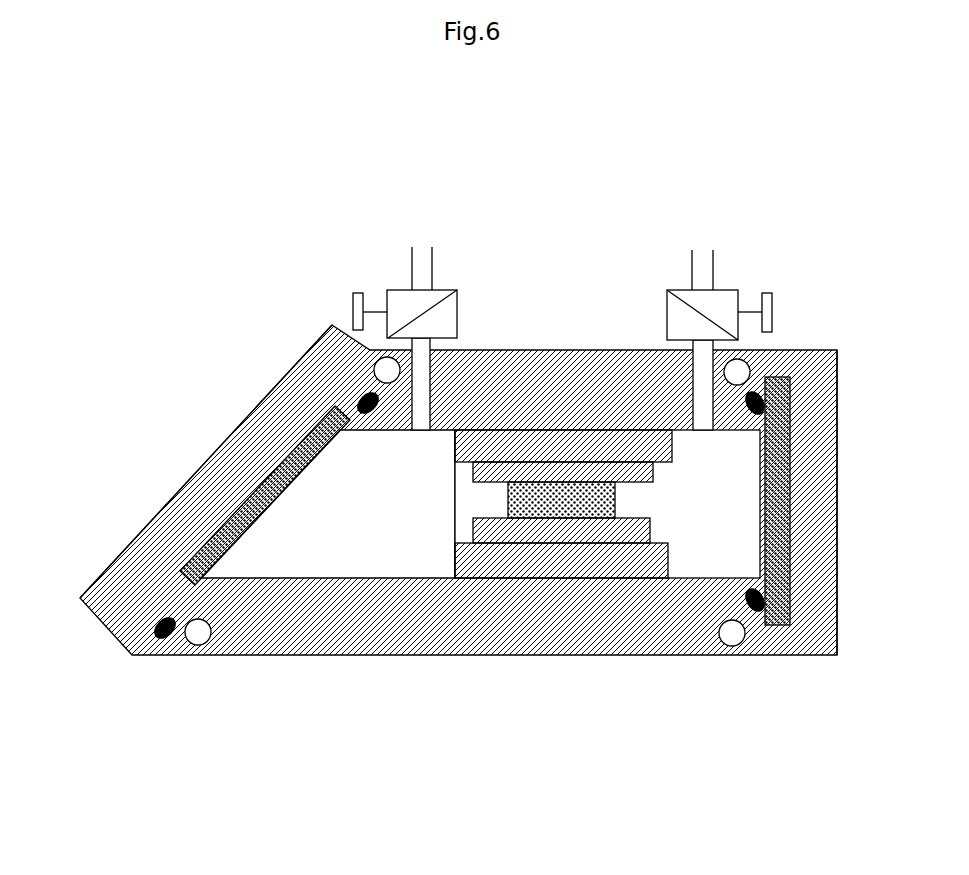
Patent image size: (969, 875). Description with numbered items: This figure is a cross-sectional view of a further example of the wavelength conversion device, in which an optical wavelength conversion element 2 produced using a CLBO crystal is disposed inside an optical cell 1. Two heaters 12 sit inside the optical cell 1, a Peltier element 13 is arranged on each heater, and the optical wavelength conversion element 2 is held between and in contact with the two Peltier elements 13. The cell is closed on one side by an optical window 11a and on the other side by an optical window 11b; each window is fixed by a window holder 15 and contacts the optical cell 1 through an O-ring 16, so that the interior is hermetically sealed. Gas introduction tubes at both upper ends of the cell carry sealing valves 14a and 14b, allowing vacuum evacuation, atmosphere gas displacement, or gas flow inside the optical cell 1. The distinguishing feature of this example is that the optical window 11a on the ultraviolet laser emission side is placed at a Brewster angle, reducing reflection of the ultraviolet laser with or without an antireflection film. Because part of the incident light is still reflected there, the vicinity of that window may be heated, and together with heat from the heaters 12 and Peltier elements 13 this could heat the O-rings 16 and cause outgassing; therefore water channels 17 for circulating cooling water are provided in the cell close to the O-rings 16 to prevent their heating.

The optical cell 1 is at (530, 350).
The optical wavelength conversion element 2 is at (532, 495).
The optical window 11a is at (310, 450).
The optical window 11b is at (785, 628).
The heater 12 is at (590, 410).
The Peltier element 13 is at (625, 483).
The sealing valve 14a is at (400, 312).
The sealing valve 14b is at (726, 308).
The window holder 15 is at (108, 567).
The O-ring 16 is at (165, 640).
The water channel 17 is at (385, 358).